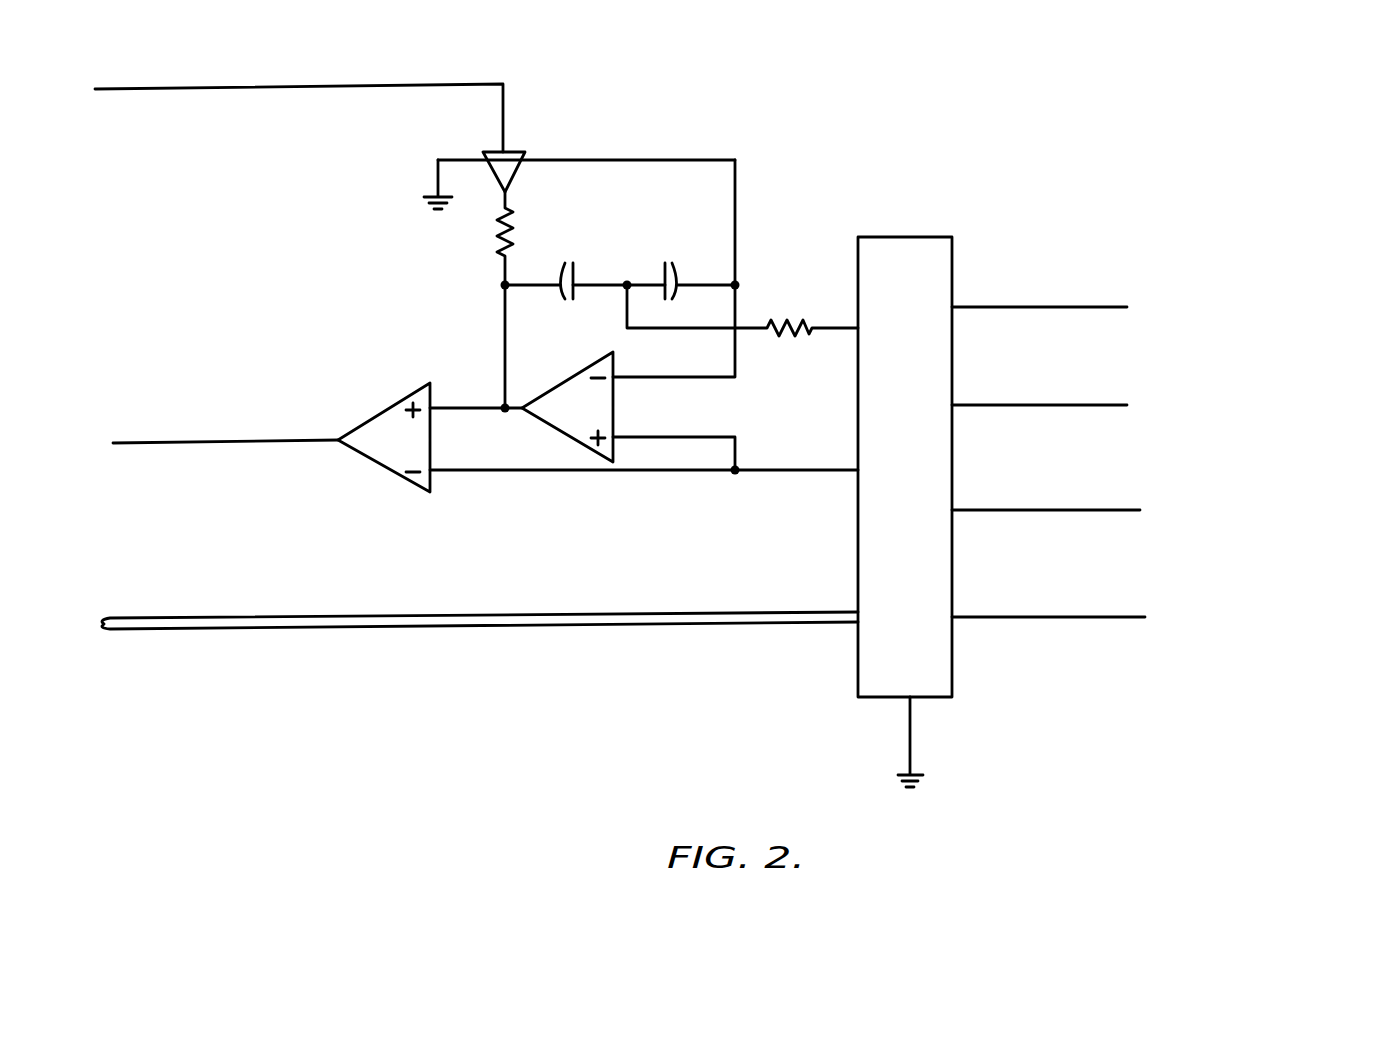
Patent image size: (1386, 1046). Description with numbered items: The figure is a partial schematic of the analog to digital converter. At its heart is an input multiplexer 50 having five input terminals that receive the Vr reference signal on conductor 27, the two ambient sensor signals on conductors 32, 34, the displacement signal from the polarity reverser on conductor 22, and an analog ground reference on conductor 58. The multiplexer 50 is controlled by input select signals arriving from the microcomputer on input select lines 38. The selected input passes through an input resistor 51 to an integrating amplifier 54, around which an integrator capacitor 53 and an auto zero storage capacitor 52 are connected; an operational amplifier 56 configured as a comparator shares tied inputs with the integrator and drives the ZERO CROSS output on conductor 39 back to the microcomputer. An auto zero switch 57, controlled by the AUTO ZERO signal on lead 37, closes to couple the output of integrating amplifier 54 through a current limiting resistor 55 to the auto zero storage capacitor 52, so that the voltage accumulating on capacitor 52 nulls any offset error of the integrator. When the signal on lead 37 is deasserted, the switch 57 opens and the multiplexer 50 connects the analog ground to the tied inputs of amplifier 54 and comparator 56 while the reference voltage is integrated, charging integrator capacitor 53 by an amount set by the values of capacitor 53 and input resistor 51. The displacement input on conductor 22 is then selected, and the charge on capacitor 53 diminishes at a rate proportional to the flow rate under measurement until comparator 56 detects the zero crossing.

The lead 37 is at (149, 90).
The auto zero switch 57 is at (526, 152).
The current limiting resistor 55 is at (498, 250).
The integrator capacitor 53 is at (565, 262).
The auto zero storage capacitor 52 is at (672, 262).
The input resistor 51 is at (795, 318).
The integrating amplifier 54 is at (592, 366).
The operational amplifier configured as a comparator 56 is at (418, 386).
The conductor 39 is at (180, 443).
The input select lines 38 is at (246, 631).
The input multiplexer 50 is at (904, 237).
The conductor 22 is at (1034, 307).
The conductor 32 is at (1036, 405).
The conductor 34 is at (1030, 510).
The conductor 27 is at (1036, 617).
The conductor 58 is at (908, 738).